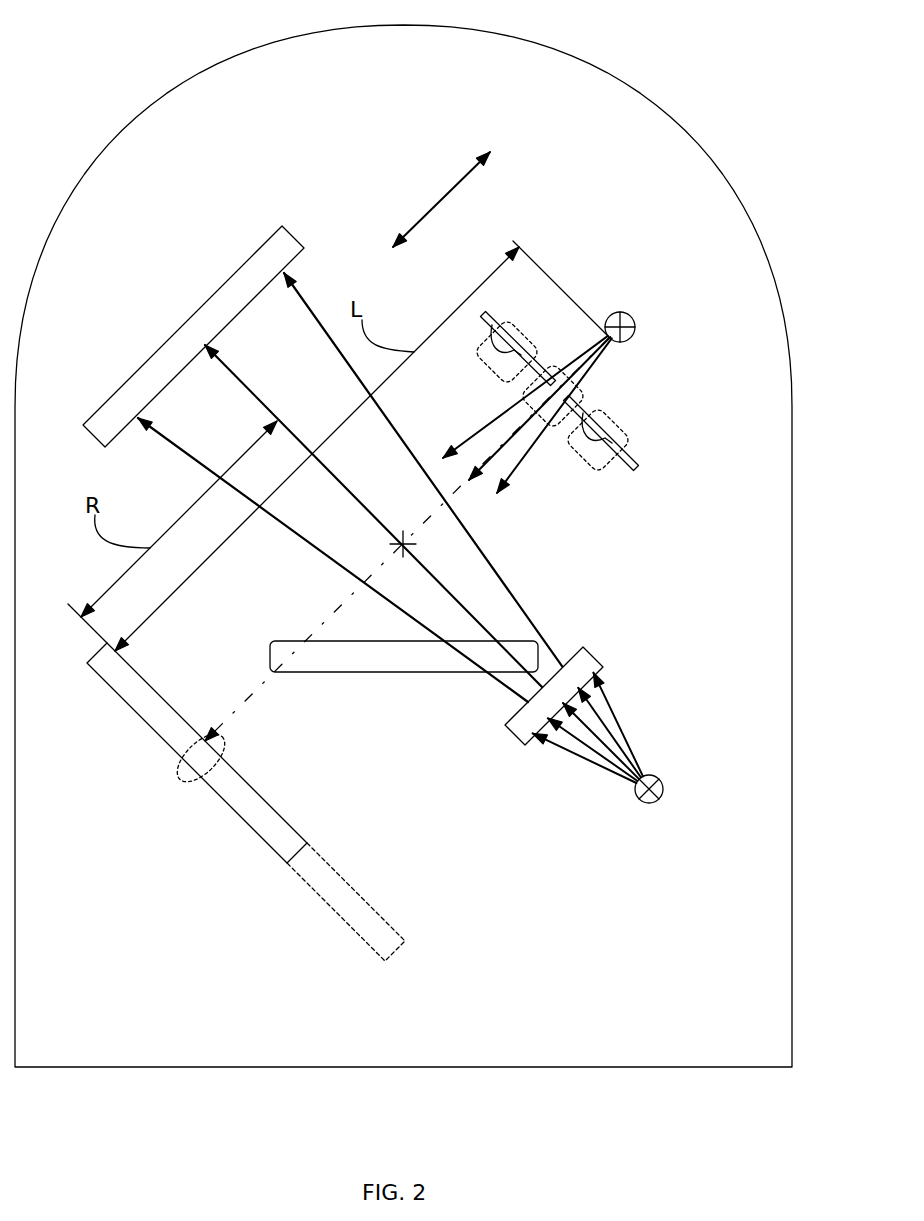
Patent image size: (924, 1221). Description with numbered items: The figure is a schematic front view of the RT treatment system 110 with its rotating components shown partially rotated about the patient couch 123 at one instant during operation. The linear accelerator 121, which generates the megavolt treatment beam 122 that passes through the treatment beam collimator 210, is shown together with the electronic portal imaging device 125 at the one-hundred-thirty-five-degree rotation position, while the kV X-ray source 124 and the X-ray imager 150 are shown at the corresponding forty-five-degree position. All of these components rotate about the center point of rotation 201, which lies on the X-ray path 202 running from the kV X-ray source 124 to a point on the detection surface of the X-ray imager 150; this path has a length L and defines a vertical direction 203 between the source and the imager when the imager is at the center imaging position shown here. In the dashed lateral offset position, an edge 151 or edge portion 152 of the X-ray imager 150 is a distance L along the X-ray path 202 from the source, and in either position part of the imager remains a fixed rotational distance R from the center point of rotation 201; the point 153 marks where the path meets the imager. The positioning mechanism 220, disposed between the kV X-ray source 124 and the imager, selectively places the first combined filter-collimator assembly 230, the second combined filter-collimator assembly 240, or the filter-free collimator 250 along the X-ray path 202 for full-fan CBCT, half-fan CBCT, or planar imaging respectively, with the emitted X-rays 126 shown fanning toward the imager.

The RT treatment system 110 is at (172, 78).
The linear accelerator 121 is at (648, 803).
The treatment beam 122 is at (302, 311).
The patient table or couch 123 is at (404, 657).
The kV X-ray source 124 is at (610, 314).
The MV electronic portal imaging device 125 is at (203, 305).
The reference light 126 is at (493, 421).
The X-ray imager 150 is at (232, 808).
The edge 151 is at (193, 748).
The edge portion 152 is at (220, 745).
The incidence point 153 is at (207, 737).
The center point of rotation 201 is at (390, 545).
The X-ray path 202 is at (330, 617).
The vertical direction 203 is at (447, 194).
The treatment beam collimator 210 is at (512, 735).
The positioning mechanism 220 is at (637, 467).
The first combined filter-collimator assembly 230 is at (493, 375).
The second combined filter-collimator assembly 240 is at (612, 431).
The filter-free collimator 250 is at (582, 387).